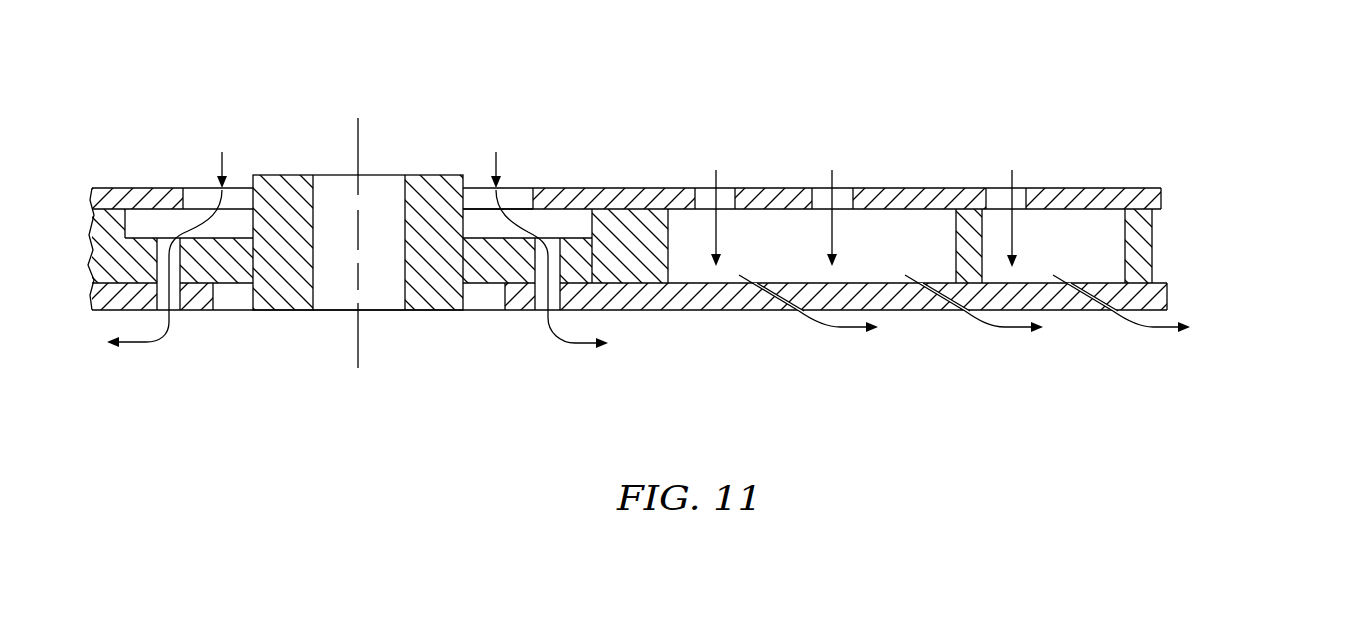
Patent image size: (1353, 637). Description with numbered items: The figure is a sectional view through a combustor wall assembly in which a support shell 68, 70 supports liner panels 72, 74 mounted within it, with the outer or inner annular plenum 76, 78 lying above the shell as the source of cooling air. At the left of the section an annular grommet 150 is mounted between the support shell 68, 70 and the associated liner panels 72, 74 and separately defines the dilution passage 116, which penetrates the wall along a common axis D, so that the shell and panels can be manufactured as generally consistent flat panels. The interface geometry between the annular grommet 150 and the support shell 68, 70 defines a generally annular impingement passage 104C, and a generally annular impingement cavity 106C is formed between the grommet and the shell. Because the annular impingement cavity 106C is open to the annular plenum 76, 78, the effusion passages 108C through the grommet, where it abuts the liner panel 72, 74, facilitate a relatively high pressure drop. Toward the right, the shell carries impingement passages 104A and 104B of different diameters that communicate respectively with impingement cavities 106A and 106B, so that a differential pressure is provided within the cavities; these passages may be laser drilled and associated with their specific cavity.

The outer annular plenum 76 is at (700, 216).
The inner annular plenum 78 is at (752, 55).
The outer support shell 68 is at (647, 151).
The inner support shell 70 is at (1153, 189).
The liner panel 72 is at (702, 299).
The liner panel 74 is at (1167, 298).
The annular grommet 150 is at (271, 163).
The dilution passage 116 is at (379, 152).
The common axis D is at (357, 355).
The impingement passage 104A is at (823, 198).
The impingement passage 104B is at (1000, 195).
The annular impingement passage 104C is at (518, 198).
The impingement cavity 106A is at (917, 232).
The impingement cavity 106B is at (1063, 220).
The annular impingement cavity 106C is at (485, 218).
The effusion passage 108C is at (537, 313).